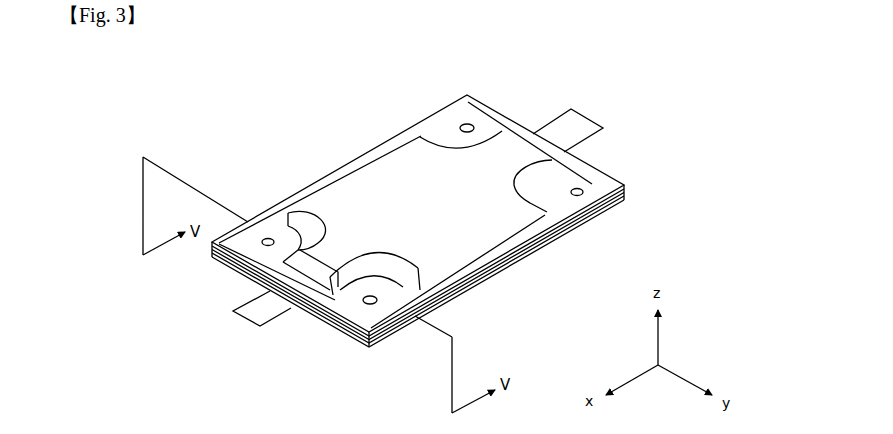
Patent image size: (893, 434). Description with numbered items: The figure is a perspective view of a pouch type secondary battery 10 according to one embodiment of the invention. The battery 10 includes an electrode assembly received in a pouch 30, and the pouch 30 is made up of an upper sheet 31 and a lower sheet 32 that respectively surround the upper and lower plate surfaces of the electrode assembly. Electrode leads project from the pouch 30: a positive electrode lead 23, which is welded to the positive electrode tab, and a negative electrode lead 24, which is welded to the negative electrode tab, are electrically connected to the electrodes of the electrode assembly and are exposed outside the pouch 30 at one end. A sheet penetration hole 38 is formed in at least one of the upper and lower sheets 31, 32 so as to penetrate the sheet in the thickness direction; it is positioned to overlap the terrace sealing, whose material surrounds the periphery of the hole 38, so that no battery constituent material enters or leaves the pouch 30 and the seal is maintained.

The pouch type secondary battery 10 is at (354, 125).
The positive electrode lead 23 is at (258, 320).
The negative electrode lead 24 is at (572, 130).
The pouch 30 is at (680, 162).
The upper sheet 31 is at (612, 184).
The lower sheet 32 is at (624, 200).
The sheet penetration hole 38 is at (470, 123).